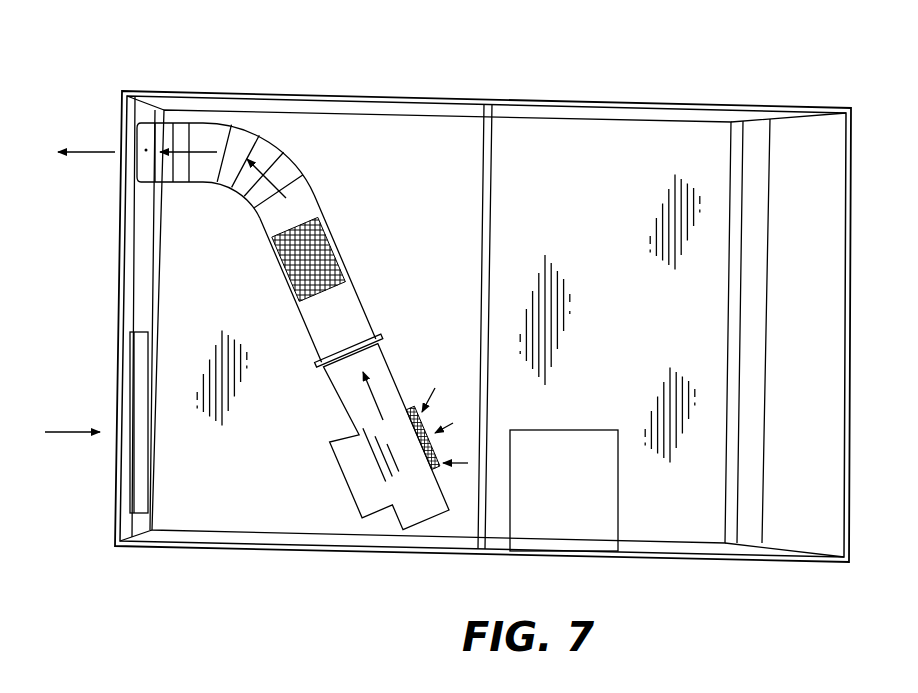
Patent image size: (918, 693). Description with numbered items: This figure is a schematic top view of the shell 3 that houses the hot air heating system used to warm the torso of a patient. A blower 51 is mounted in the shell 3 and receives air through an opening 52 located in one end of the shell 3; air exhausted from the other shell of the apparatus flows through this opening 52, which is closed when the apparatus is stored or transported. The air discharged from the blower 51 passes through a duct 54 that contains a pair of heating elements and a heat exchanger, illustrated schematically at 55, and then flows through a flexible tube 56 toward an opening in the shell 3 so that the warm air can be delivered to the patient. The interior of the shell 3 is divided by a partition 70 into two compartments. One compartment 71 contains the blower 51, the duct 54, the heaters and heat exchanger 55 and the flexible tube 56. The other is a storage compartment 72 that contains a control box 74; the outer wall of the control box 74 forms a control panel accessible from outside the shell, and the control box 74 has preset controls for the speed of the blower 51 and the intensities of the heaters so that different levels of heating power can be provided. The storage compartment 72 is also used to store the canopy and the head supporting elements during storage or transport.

The shell 3 is at (738, 558).
The blower 51 is at (350, 432).
The opening 52 is at (132, 460).
The duct 54 is at (360, 300).
The heat exchanger 55 is at (330, 230).
The flexible tube 56 is at (200, 180).
The partition 70 is at (492, 223).
The compartment 71 is at (433, 128).
The storage compartment 72 is at (653, 135).
The control box 74 is at (582, 499).